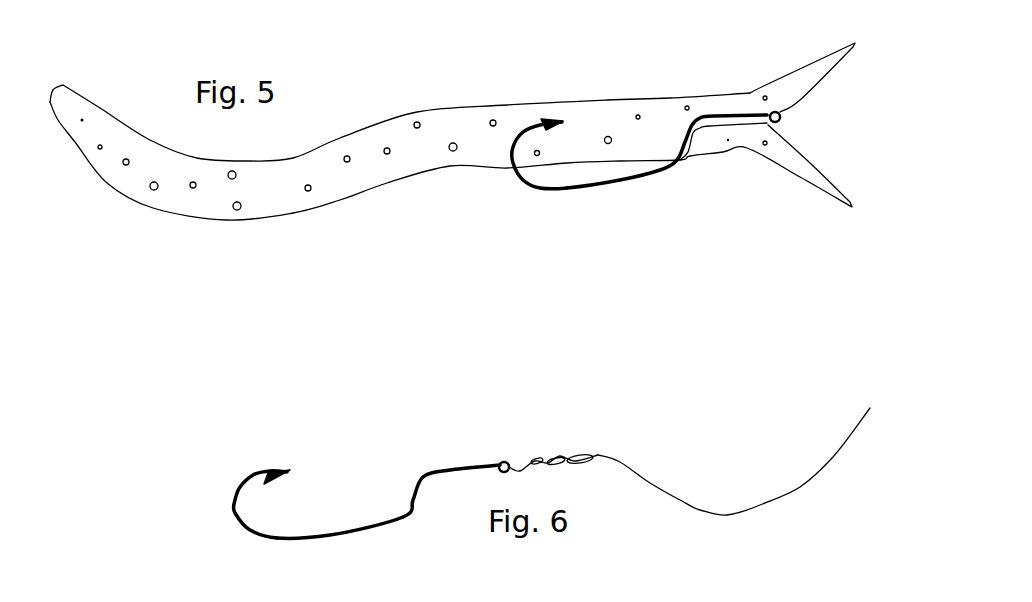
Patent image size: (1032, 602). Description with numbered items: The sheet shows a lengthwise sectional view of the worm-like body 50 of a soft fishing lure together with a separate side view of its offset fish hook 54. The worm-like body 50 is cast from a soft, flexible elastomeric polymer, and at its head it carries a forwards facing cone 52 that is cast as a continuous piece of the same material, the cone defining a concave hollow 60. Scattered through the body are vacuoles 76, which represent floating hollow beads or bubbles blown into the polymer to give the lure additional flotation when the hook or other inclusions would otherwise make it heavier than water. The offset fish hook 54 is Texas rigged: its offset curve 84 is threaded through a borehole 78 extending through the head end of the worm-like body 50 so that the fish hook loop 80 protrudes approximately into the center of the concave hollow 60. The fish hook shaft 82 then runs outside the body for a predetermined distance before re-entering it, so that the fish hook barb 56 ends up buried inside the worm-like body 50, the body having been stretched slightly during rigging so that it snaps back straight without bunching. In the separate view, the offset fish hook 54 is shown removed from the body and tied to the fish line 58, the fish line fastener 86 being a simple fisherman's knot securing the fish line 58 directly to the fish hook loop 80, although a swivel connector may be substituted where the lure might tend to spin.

In FIG. 5, the worm-like body 50 is at (107, 183).
In FIG. 5, the forwards facing cone 52 is at (855, 40).
In FIG. 5, the offset fish hook 54 is at (513, 172).
In FIG. 6, the offset fish hook 54 is at (233, 510).
In FIG. 5, the fish hook barb 56 is at (565, 121).
In FIG. 6, the fish hook barb 56 is at (297, 472).
In FIG. 6, the fish line 58 is at (800, 488).
In FIG. 5, the concave hollow 60 is at (812, 164).
In FIG. 5, the vacuoles 76 is at (347, 162).
In FIG. 5, the borehole 78 is at (712, 112).
In FIG. 5, the fish hook loop 80 is at (782, 114).
In FIG. 6, the fish hook loop 80 is at (503, 460).
In FIG. 5, the fish hook shaft 82 is at (607, 188).
In FIG. 6, the fish hook shaft 82 is at (333, 533).
In FIG. 6, the offset curve 84 is at (413, 490).
In FIG. 6, the fish line fastener 86 is at (578, 455).